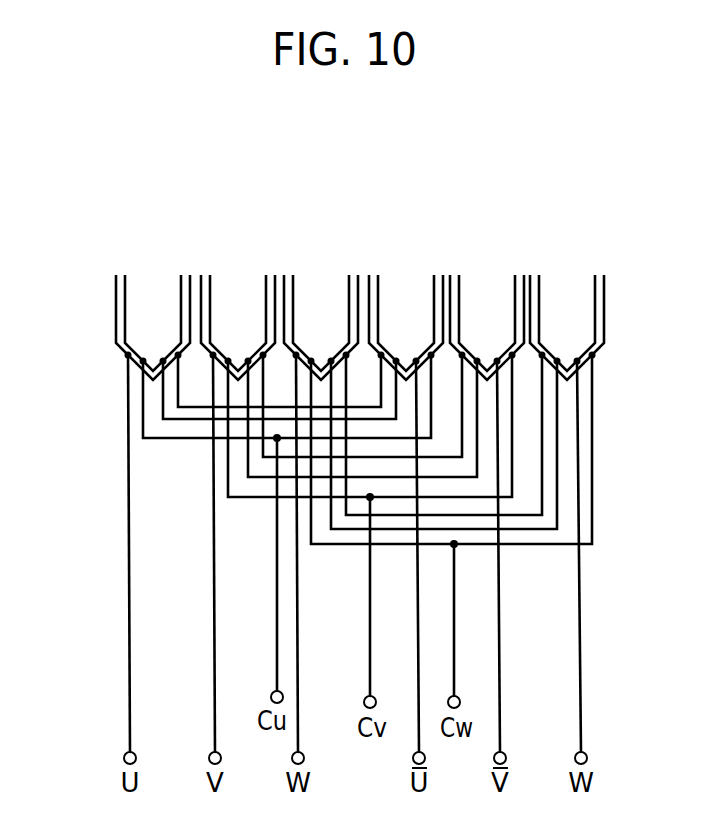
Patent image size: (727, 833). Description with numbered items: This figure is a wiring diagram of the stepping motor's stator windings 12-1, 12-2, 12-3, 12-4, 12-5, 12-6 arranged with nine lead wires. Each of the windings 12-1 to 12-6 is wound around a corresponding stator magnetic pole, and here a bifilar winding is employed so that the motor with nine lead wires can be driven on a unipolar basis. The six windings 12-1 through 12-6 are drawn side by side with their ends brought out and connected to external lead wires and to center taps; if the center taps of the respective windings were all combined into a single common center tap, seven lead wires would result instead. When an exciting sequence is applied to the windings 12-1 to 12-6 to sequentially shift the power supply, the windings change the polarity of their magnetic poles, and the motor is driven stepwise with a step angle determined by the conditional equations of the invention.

The stator winding 12-1 is at (113, 281).
The stator winding 12-2 is at (208, 282).
The stator winding 12-3 is at (318, 238).
The stator winding 12-4 is at (438, 240).
The stator winding 12-5 is at (453, 284).
The stator winding 12-6 is at (605, 287).